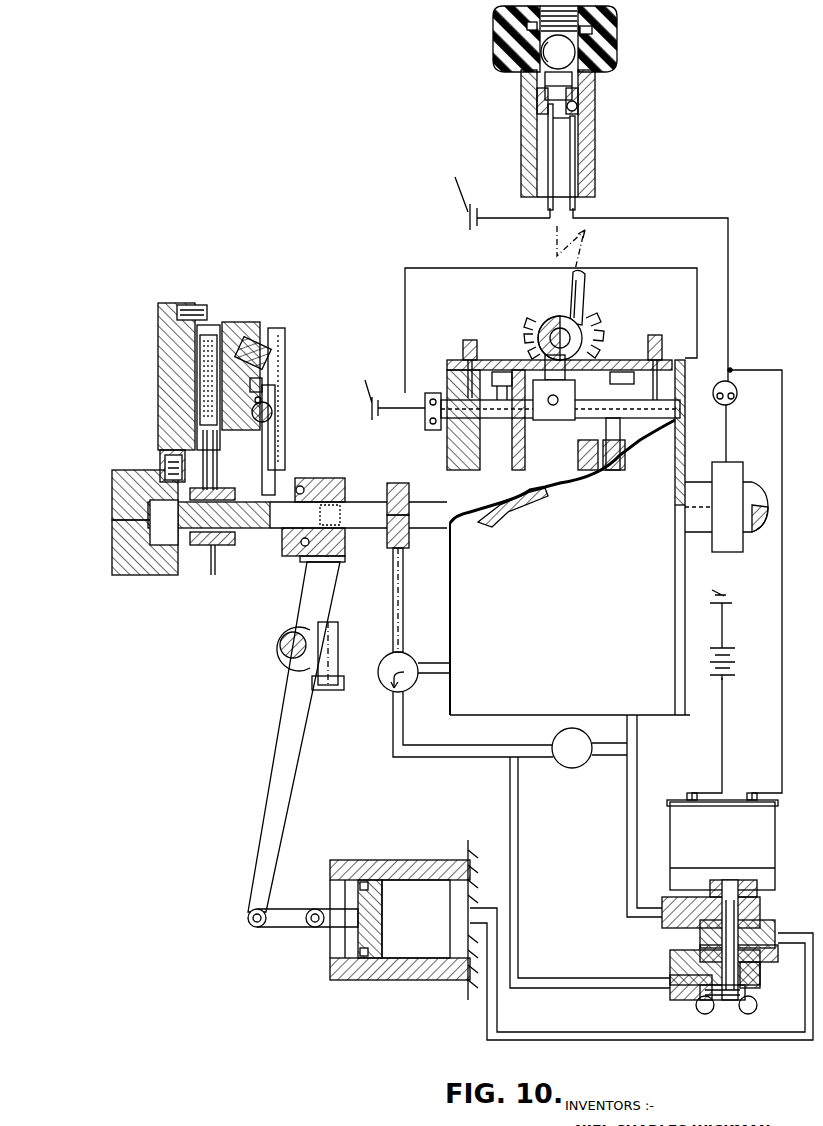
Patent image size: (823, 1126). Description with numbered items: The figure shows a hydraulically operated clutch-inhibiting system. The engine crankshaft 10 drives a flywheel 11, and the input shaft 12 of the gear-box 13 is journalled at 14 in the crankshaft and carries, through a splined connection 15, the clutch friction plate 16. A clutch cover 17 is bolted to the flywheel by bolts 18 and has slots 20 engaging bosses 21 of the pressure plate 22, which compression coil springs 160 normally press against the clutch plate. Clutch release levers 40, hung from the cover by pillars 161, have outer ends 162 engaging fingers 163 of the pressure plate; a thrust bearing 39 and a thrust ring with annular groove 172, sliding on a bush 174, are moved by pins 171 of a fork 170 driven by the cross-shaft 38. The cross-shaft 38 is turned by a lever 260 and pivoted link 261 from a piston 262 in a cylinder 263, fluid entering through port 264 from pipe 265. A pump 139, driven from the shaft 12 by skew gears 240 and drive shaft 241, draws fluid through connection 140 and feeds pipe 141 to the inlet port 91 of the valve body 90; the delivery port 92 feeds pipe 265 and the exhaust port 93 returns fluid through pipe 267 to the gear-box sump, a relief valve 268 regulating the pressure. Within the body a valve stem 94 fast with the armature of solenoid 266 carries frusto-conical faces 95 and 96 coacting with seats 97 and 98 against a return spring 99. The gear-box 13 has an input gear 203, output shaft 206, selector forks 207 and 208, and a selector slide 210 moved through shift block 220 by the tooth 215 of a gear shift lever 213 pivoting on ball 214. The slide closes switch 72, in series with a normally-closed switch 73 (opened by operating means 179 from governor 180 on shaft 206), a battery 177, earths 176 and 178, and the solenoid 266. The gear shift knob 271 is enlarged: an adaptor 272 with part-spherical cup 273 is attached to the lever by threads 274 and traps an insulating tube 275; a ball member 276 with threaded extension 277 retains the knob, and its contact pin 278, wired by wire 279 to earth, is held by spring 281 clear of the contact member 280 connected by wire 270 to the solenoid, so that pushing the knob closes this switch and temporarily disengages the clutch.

The crankshaft 10 is at (135, 548).
The flywheel 11 is at (158, 310).
The input shaft 12 is at (297, 515).
The gear-box 13 is at (563, 638).
The journal 14 is at (120, 482).
The splined connection 15 is at (237, 538).
The clutch friction plate 16 is at (203, 380).
The clutch cover 17 is at (284, 333).
The bolts 18 is at (207, 310).
The axially-extending slots 20 is at (215, 328).
The radially-extending bosses 21 is at (257, 325).
The pressure plate 22 is at (237, 415).
The cross-shaft 38 is at (303, 645).
The thrust bearing 39 is at (305, 482).
The clutch release levers 40 is at (266, 467).
The switch 72 is at (431, 393).
The switch 73 is at (728, 400).
The valve body 90 is at (692, 960).
The inlet port 91 is at (672, 982).
The delivery port 92 is at (762, 942).
The exhaust port 93 is at (672, 915).
The valve stem 94 is at (762, 893).
The valve face 95 is at (710, 932).
The valve face 96 is at (697, 993).
The valve seat 97 is at (778, 923).
The valve seat 98 is at (757, 968).
The return spring 99 is at (757, 1003).
The pump 139 is at (383, 659).
The pipe 140 is at (433, 665).
The pipe 141 is at (438, 753).
The compression coil springs 160 is at (278, 358).
The pillars 161 is at (274, 420).
The outer ends 162 is at (262, 401).
The fingers 163 is at (264, 384).
The fork 170 is at (322, 581).
The pins 171 is at (347, 530).
The annular groove 172 is at (330, 478).
The bush 174 is at (350, 488).
The earth 176 is at (389, 387).
The battery 177 is at (727, 647).
The earth 178 is at (737, 590).
The operating means 179 is at (728, 432).
The governor 180 is at (725, 495).
The gear 203 is at (503, 505).
The power output shaft 206 is at (752, 512).
The selector fork 207 is at (532, 487).
The selector fork 208 is at (612, 452).
The selector slide 210 is at (494, 375).
The gear shift lever 213 is at (596, 167).
The ball 214 is at (560, 338).
The gear shift tooth 215 is at (588, 367).
The shift block 220 is at (542, 404).
The skew gears 240 is at (403, 480).
The drive shaft 241 is at (403, 625).
The lever 260 is at (288, 713).
The pivoted link 261 is at (273, 918).
The piston 262 is at (370, 923).
The cylinder 263 is at (423, 970).
The port 264 is at (457, 918).
The pipe 265 is at (572, 1032).
The solenoid 266 is at (718, 832).
The pipe 267 is at (633, 887).
The relief valve 268 is at (560, 766).
The wire 270 is at (610, 218).
The gear shift knob 271 is at (618, 15).
The adaptor 272 is at (530, 68).
The part-spherical cup 273 is at (560, 48).
The threads 274 is at (594, 133).
The insulating tube 275 is at (536, 96).
The ball member 276 is at (527, 27).
The threaded extension 277 is at (495, 15).
The contact pin 278 is at (557, 83).
The wire 279 is at (550, 135).
The contact member 280 is at (583, 107).
The compression coil spring 281 is at (592, 31).